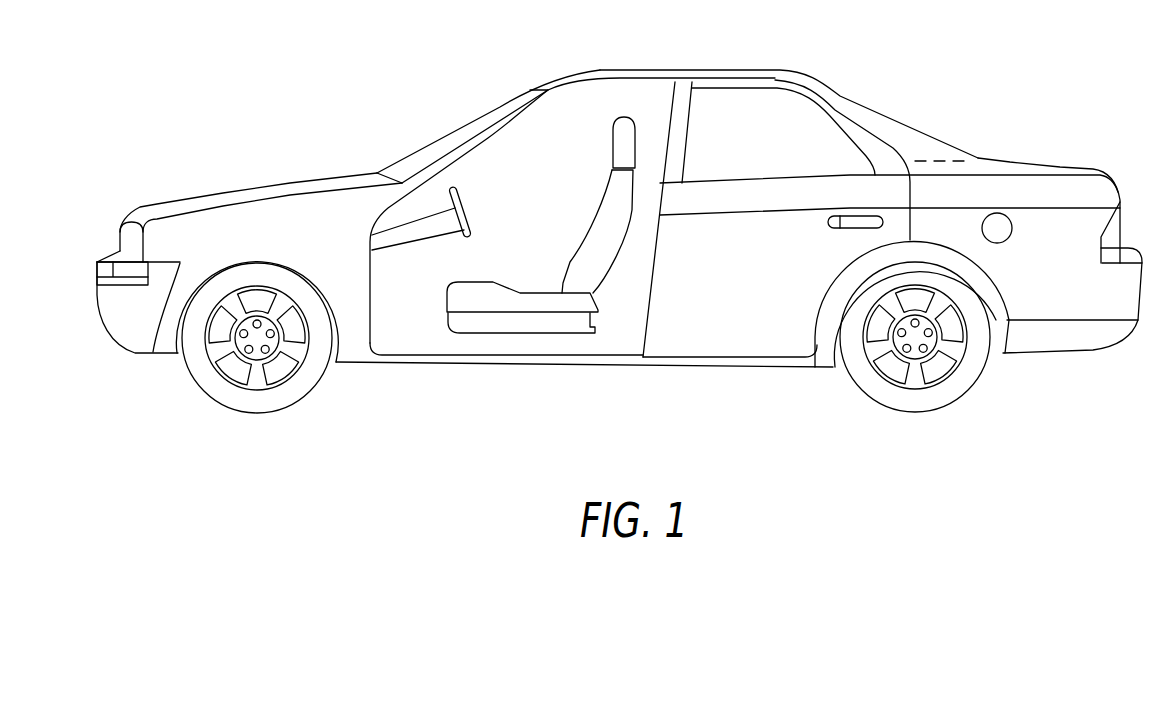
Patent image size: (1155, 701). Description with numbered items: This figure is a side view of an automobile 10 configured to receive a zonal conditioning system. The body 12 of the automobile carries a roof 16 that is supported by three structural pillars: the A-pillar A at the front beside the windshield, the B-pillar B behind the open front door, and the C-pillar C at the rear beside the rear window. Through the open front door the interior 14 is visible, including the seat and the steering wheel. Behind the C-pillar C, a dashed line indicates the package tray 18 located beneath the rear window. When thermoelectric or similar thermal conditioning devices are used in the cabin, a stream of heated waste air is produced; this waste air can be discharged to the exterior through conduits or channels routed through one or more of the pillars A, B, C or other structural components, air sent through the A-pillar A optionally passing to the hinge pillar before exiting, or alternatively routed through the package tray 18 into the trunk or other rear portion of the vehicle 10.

The vehicle 10 is at (1040, 153).
The vehicle body / passenger compartment 12 is at (600, 114).
The vehicle interior 14 is at (538, 237).
The roof 16 is at (783, 70).
The package tray 18 is at (950, 160).
The A-pillar A is at (430, 168).
The B-pillar B is at (683, 100).
The C-pillar C is at (883, 167).